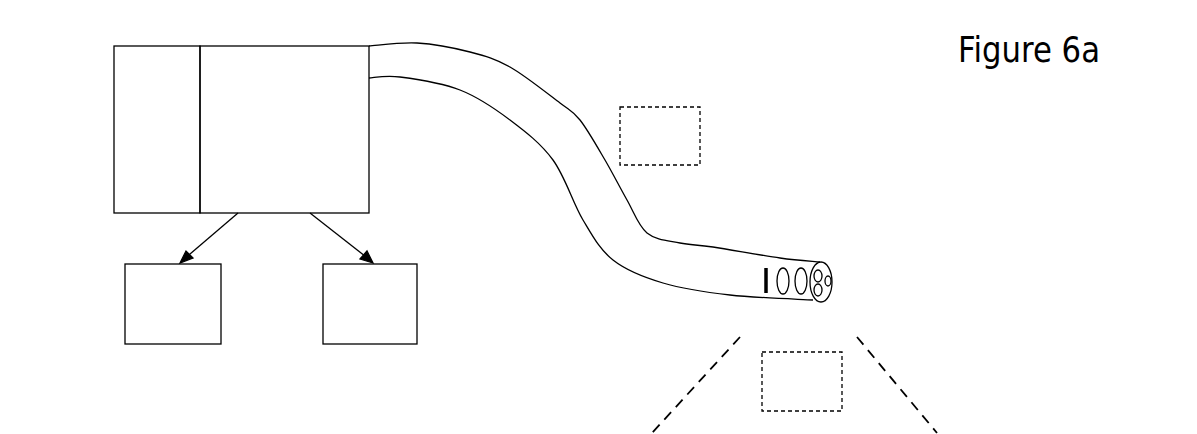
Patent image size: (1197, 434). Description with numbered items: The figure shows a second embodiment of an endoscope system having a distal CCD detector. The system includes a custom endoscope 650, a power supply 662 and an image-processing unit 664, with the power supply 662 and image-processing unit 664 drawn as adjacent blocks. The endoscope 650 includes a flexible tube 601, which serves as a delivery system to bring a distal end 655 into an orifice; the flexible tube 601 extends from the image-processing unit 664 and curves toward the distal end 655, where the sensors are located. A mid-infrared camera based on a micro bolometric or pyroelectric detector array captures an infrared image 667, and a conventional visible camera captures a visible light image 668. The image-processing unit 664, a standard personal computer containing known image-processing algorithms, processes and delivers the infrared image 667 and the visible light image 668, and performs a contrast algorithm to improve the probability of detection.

The flexible tube 601 is at (577, 118).
The custom endoscope 650 is at (660, 136).
The distal end 655 is at (794, 347).
The power supply 662 is at (157, 129).
The image-processing unit 664 is at (284, 129).
The infrared image 667 is at (181, 278).
The visible light image 668 is at (363, 278).